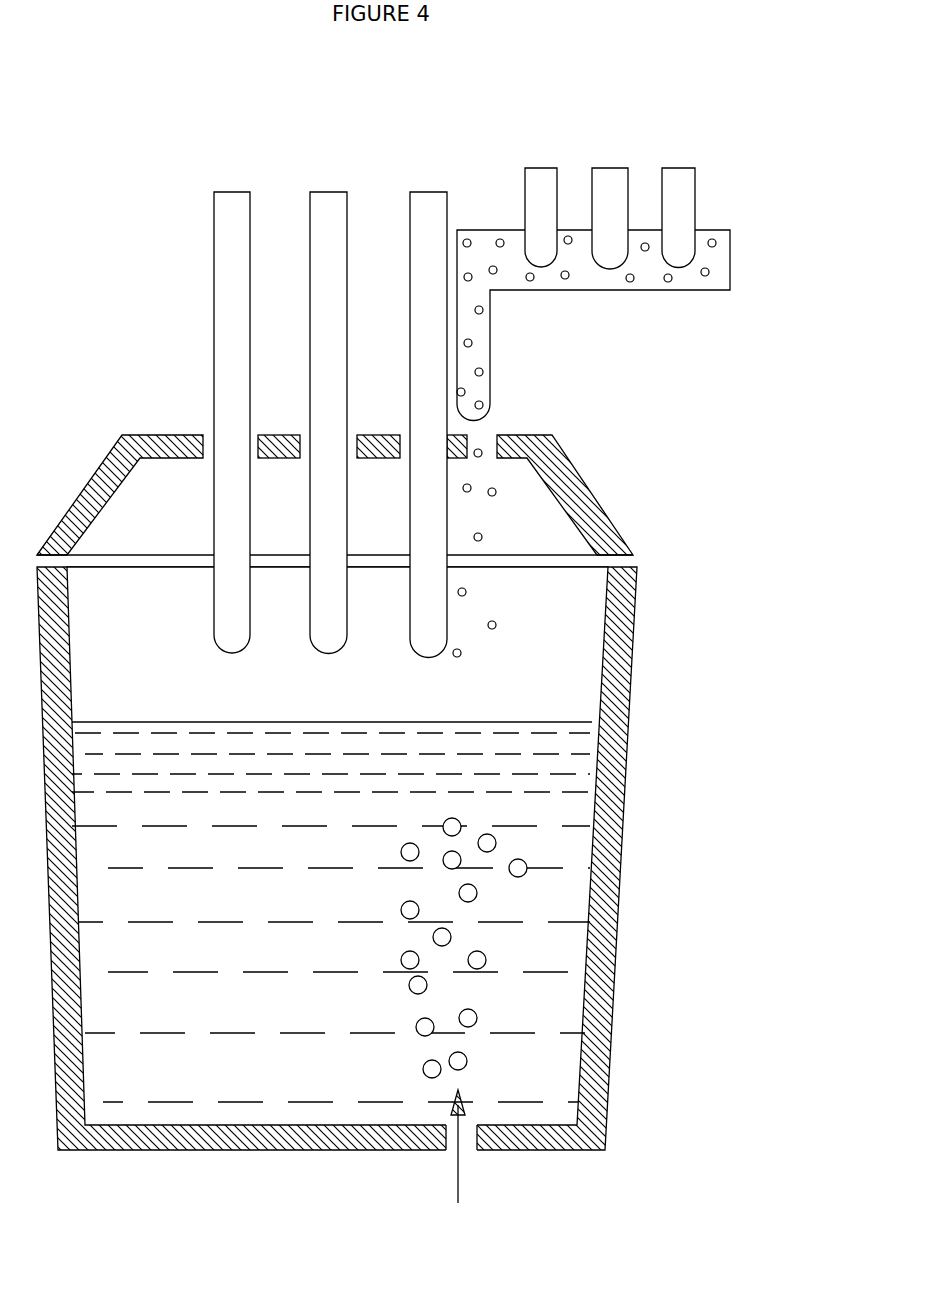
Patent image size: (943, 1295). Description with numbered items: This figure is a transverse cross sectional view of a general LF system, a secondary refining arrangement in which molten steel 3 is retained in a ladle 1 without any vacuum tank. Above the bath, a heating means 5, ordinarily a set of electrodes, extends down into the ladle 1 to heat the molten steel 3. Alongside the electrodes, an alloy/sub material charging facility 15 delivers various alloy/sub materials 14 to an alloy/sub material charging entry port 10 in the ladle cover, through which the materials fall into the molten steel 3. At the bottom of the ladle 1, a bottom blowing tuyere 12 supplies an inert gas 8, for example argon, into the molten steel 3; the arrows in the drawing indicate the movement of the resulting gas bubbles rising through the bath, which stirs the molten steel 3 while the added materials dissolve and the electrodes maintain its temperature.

The ladle 1 is at (613, 823).
The molten steel 3 is at (273, 1060).
The heating means (electrodes) 5 is at (456, 181).
The inert gas 8 is at (486, 958).
The alloy/sub material charging entry port 10 is at (493, 431).
The bottom blowing tuyere 12 is at (468, 1134).
The alloy/sub material 14 is at (481, 535).
The alloy/sub material charging facility 15 is at (520, 308).